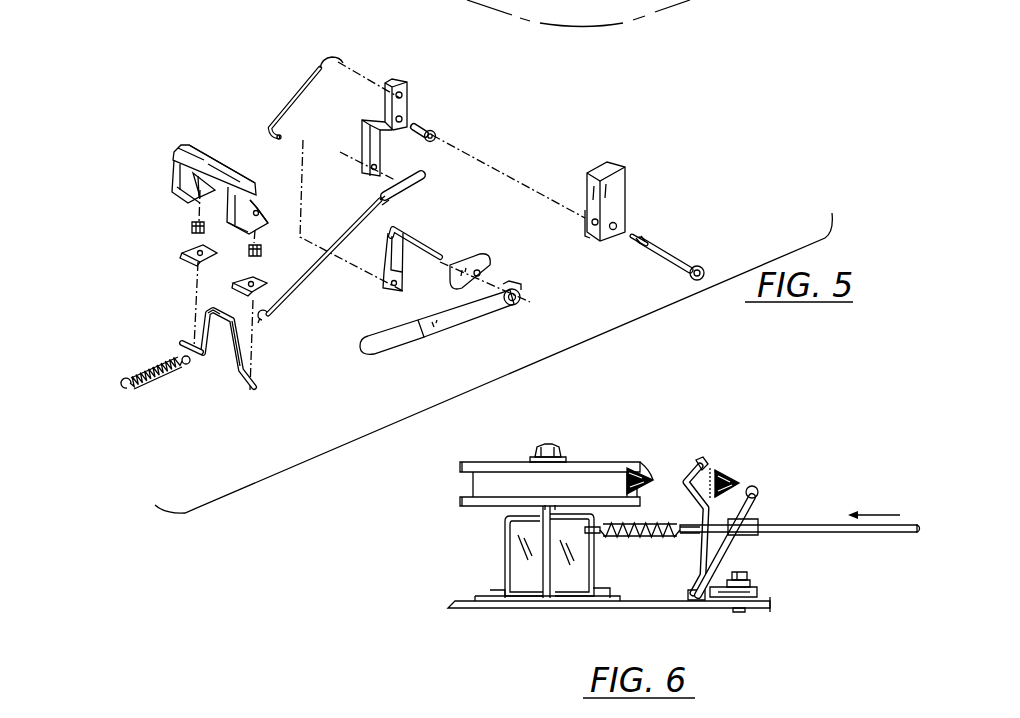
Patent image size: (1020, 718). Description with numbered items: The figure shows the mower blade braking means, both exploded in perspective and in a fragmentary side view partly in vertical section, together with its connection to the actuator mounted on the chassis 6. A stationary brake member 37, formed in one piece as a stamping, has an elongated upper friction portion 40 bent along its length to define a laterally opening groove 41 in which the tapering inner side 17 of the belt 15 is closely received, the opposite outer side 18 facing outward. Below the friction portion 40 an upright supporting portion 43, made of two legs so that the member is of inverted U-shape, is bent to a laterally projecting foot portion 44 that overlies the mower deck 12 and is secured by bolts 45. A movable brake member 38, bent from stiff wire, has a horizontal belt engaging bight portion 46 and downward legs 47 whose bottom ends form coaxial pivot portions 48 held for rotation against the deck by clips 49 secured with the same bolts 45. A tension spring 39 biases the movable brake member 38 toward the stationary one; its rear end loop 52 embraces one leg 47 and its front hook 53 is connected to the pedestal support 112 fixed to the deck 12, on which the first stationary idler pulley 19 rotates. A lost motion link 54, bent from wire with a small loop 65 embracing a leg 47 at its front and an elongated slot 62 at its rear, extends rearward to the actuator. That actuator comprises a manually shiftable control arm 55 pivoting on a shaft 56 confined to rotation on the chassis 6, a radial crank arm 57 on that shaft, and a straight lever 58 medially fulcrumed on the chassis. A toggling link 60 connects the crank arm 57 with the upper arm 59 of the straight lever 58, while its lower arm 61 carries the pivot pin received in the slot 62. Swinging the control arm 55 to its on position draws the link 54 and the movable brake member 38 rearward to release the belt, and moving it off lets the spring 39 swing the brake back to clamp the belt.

In FIG. 5, the chassis 6 is at (492, 267).
In FIG. 6, the mower deck 12 is at (641, 600).
In FIG. 6, the belt 15 is at (768, 441).
In FIG. 6, the inner side of the belt 17 is at (653, 476).
In FIG. 6, the outer side of the belt 18 is at (627, 475).
In FIG. 6, the first stationary idler pulley 19 is at (508, 460).
In FIG. 5, the stationary brake member 37 is at (168, 147).
In FIG. 6, the stationary brake member 37 is at (661, 514).
In FIG. 5, the movable brake member 38 is at (226, 379).
In FIG. 6, the movable brake member 38 is at (760, 528).
In FIG. 5, the tension spring 39 is at (152, 368).
In FIG. 6, the tension spring 39 is at (600, 544).
In FIG. 5, the upper friction portion 40 is at (206, 160).
In FIG. 6, the upper friction portion 40 is at (690, 488).
In FIG. 5, the groove 41 is at (250, 191).
In FIG. 6, the groove 41 is at (700, 460).
In FIG. 5, the supporting portion 43 is at (223, 210).
In FIG. 6, the foot portion 44 is at (750, 588).
In FIG. 6, the bolts 45 is at (738, 612).
In FIG. 5, the bight portion 46 is at (214, 311).
In FIG. 6, the bight portion 46 is at (758, 490).
In FIG. 5, the legs 47 is at (228, 362).
In FIG. 6, the legs 47 is at (742, 534).
In FIG. 5, the pivot portions 48 is at (181, 341).
In FIG. 5, the clips 49 is at (190, 253).
In FIG. 6, the clips 49 is at (718, 603).
In FIG. 5, the loop 52 is at (187, 356).
In FIG. 5, the hook 53 is at (126, 383).
In FIG. 6, the lost motion link 54 is at (824, 522).
In FIG. 5, the control arm 55 is at (440, 320).
In FIG. 5, the shaft 56 is at (430, 249).
In FIG. 5, the crank arm 57 is at (387, 252).
In FIG. 5, the straight lever 58 is at (420, 110).
In FIG. 5, the upper arm 59 is at (402, 80).
In FIG. 5, the toggling link 60 is at (318, 67).
In FIG. 5, the lower arm 61 is at (375, 155).
In FIG. 5, the slot 62 is at (423, 180).
In FIG. 5, the loop 65 is at (271, 319).
In FIG. 6, the pedestal support 112 is at (557, 555).